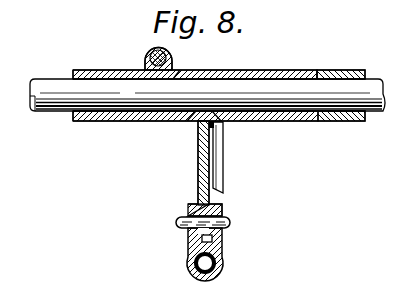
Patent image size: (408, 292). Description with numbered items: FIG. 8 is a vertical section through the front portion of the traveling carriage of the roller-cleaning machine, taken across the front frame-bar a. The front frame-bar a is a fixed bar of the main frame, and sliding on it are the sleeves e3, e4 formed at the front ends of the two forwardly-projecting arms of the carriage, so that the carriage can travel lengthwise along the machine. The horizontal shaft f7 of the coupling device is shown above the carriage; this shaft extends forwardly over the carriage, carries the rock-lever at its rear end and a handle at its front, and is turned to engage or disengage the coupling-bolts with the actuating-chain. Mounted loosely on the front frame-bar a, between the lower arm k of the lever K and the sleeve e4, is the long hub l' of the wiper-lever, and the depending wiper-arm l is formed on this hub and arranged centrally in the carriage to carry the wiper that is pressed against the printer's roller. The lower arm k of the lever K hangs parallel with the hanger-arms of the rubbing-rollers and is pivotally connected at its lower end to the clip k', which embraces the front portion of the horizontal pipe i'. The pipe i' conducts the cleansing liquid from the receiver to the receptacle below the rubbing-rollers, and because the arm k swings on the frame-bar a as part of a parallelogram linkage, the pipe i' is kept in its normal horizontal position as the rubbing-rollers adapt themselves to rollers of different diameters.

The front frame-bar a is at (207, 86).
The sleeve e3 is at (195, 85).
The sleeve e4 is at (341, 62).
The horizontal shaft f7 is at (157, 49).
The long hub l' is at (314, 130).
The lower arm k is at (201, 168).
The depending arm l is at (222, 157).
The clip k' is at (212, 234).
The horizontal pipe i' is at (215, 254).